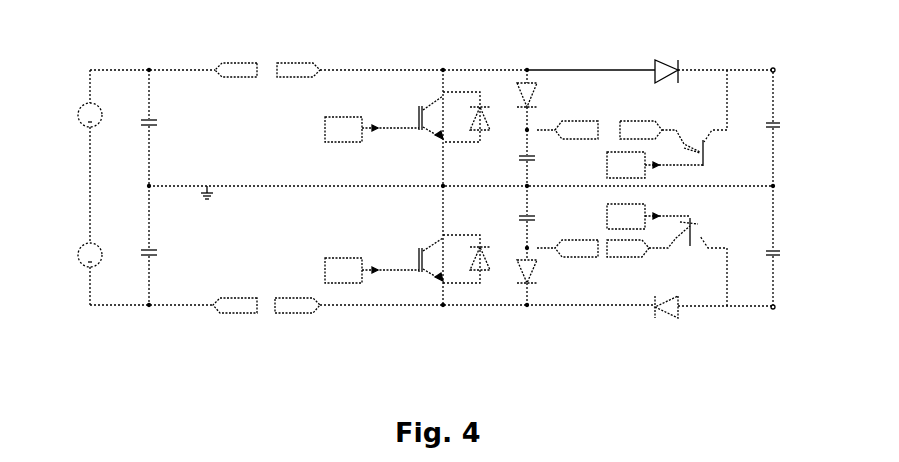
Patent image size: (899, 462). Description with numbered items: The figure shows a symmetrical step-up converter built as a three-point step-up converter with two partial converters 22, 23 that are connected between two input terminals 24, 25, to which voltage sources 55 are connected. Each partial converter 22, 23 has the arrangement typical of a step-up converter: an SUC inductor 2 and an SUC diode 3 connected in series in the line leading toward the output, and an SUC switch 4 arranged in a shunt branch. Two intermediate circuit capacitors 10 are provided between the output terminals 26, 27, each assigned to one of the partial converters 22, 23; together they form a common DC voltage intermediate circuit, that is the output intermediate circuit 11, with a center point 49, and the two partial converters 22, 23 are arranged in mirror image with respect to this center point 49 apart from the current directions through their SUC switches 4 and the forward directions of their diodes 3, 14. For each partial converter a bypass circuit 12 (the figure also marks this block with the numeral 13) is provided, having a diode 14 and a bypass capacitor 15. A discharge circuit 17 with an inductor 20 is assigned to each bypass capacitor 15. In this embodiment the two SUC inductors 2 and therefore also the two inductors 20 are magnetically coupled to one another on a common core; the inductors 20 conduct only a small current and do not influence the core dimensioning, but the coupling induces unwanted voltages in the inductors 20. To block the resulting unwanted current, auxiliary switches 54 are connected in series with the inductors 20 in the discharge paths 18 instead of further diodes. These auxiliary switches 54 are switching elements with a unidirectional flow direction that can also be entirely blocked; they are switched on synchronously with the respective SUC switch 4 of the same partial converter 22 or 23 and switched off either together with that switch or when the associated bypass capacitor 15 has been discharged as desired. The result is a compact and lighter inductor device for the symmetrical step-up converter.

The SUC inductor 2 is at (284, 60).
The SUC diode 3 is at (673, 58).
The SUC switch 4 is at (419, 100).
The intermediate circuit capacitor 10 is at (776, 124).
The output intermediate circuit 11 is at (802, 192).
The bypass circuit 12 is at (573, 204).
The auxiliary connection 13 is at (546, 78).
The diode 14 is at (521, 97).
The bypass capacitor 15 is at (531, 160).
The discharge circuit 17 is at (686, 204).
The discharge path 18 is at (667, 117).
The inductor 20 is at (610, 116).
The partial converter 22 is at (441, 62).
The partial converter 23 is at (438, 317).
The input terminal 24 is at (148, 69).
The input terminal 25 is at (148, 306).
The output terminal 26 is at (774, 67).
The output terminal 27 is at (775, 309).
The center point 49 is at (775, 186).
The auxiliary switch 54 is at (717, 153).
The voltage source 55 is at (79, 108).